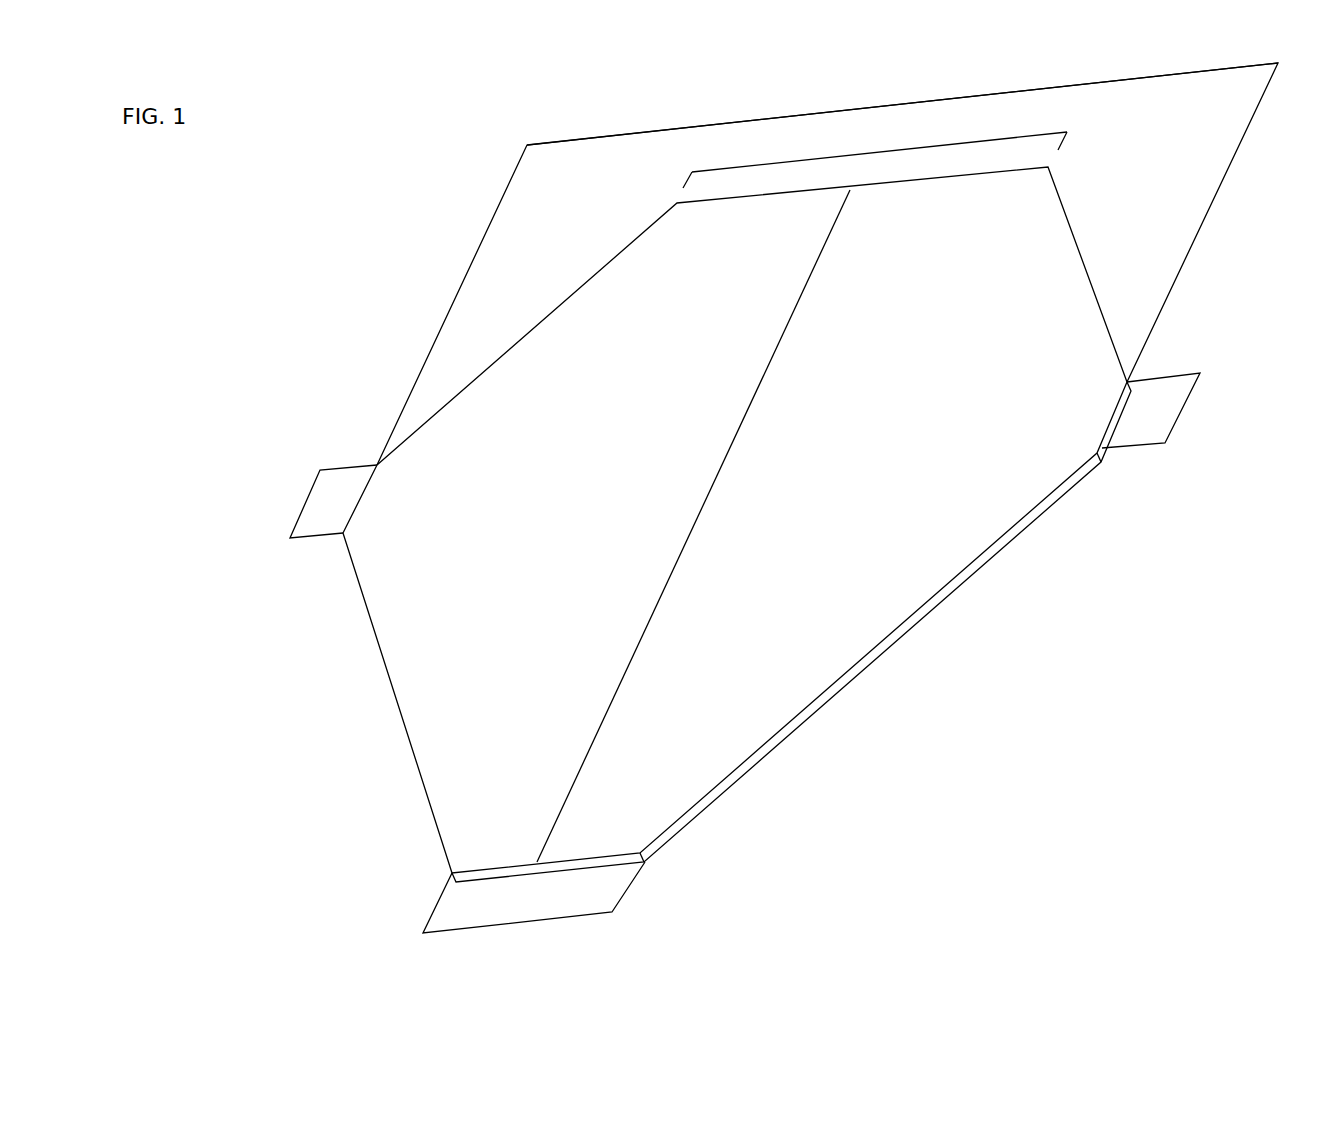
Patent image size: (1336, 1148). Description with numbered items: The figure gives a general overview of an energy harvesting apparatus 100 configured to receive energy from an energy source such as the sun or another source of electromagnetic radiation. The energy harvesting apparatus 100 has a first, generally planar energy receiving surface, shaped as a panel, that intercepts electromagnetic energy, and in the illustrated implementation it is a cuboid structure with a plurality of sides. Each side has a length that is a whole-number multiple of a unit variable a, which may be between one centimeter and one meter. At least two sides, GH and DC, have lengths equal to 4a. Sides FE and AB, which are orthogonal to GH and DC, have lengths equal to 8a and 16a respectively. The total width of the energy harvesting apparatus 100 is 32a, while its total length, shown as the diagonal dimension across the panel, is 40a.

The energy harvesting apparatus 100 is at (982, 598).
The total width 32a is at (902, 104).
The length of side AB 16a is at (875, 157).
The length of side FE 8a is at (534, 897).
The length of sides GH and DC 4a is at (739, 455).
The total length 40a is at (693, 526).